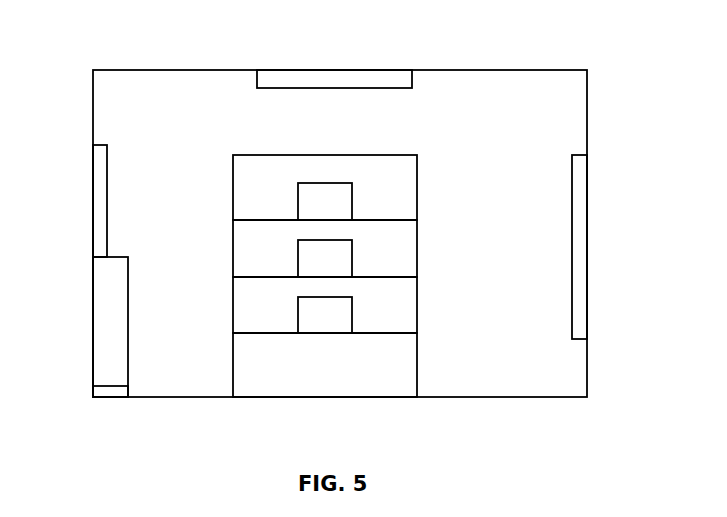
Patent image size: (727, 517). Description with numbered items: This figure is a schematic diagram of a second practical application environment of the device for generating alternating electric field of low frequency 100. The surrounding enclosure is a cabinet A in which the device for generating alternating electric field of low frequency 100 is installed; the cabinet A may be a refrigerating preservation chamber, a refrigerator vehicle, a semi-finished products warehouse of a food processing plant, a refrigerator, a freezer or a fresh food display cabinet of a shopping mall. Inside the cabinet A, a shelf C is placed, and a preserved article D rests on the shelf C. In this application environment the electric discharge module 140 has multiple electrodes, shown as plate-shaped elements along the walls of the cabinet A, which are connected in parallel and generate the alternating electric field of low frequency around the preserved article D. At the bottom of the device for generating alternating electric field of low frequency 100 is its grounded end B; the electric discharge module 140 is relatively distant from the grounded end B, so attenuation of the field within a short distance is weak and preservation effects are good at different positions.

The cabinet A is at (210, 70).
The electric discharge module 140 is at (340, 80).
The device for generating alternating electric field of low frequency 100 is at (110, 322).
The grounded end B is at (109, 392).
The shelf C is at (265, 333).
The preserved article D is at (341, 313).